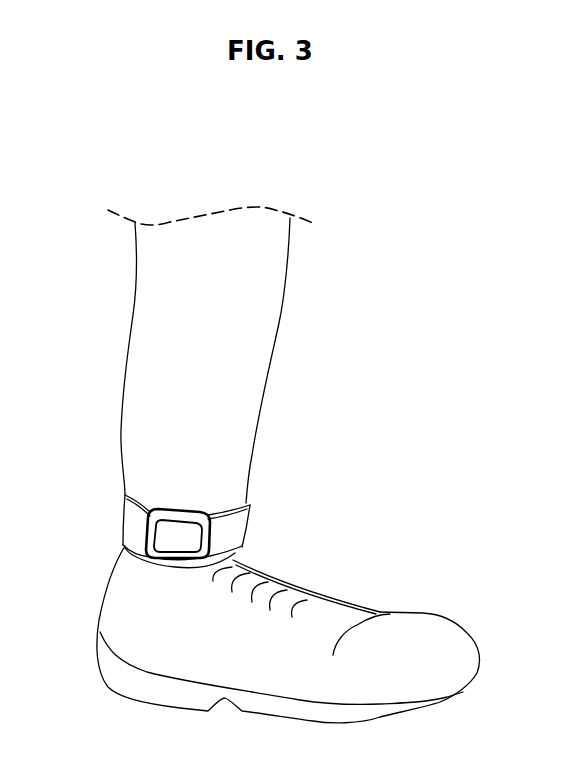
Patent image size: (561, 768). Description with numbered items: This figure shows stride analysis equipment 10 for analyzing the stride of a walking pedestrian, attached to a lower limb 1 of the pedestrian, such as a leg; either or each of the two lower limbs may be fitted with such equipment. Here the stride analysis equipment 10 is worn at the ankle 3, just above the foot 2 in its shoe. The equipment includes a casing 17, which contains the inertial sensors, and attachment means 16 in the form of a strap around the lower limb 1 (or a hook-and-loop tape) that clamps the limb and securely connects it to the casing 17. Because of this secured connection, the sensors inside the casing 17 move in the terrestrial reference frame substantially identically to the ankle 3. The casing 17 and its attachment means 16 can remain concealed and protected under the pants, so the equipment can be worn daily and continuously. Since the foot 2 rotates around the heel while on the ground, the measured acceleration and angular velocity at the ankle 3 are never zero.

The lower limb 1 is at (204, 370).
The foot 2 is at (263, 651).
The ankle 3 is at (172, 515).
The stride analysis equipment 10 is at (138, 558).
The attachment means 16 is at (122, 517).
The casing 17 is at (211, 543).